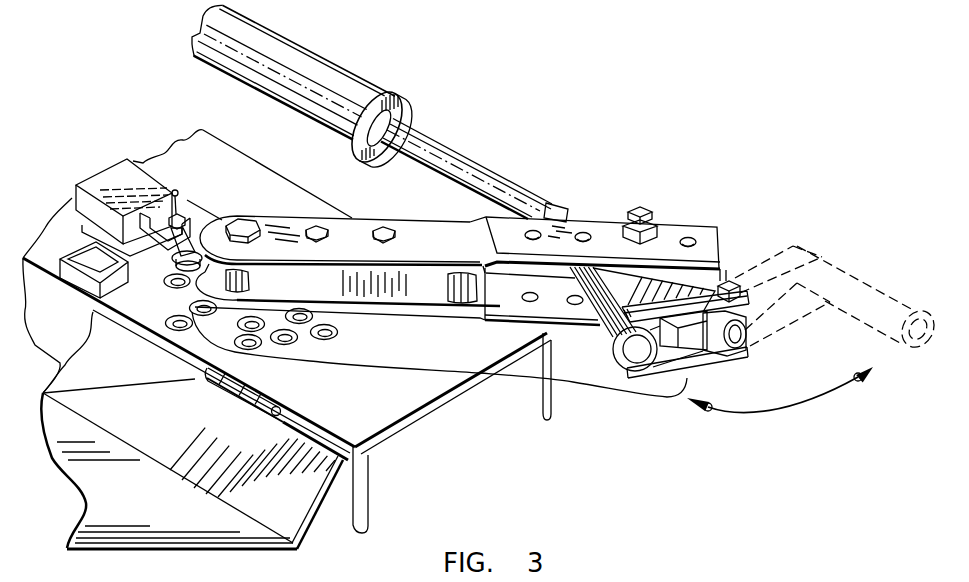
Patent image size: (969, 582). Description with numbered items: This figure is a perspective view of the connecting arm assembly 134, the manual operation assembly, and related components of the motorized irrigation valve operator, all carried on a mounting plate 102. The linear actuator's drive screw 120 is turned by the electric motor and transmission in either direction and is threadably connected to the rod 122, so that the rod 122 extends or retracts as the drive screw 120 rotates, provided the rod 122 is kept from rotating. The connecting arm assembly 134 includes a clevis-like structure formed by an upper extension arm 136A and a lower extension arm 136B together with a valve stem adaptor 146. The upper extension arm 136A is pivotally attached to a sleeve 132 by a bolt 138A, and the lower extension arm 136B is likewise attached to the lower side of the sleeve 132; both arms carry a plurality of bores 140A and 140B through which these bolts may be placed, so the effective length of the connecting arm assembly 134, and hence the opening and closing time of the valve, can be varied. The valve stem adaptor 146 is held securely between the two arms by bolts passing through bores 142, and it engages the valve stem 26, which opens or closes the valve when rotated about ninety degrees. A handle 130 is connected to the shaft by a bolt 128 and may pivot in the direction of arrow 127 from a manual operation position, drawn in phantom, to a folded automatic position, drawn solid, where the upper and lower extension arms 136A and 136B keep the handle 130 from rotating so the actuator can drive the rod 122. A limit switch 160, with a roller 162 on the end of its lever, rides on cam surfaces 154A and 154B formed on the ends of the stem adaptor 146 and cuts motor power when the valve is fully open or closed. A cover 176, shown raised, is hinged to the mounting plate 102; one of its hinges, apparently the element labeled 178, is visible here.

The valve stem 26 is at (244, 220).
The mounting plate 102 is at (372, 393).
The drive screw 120 is at (300, 60).
The rod 122 is at (467, 170).
The arrow 127 is at (780, 413).
The bolt 128 is at (742, 266).
The handle 130 is at (700, 366).
The sleeve 132 is at (728, 280).
The connecting arm assembly 134 is at (485, 387).
The upper extension arm 136A is at (457, 249).
The lower extension arm 136B is at (522, 305).
The bolt 138A is at (642, 207).
The bores 140A is at (583, 232).
The bores 140B is at (573, 305).
The bores 142 is at (385, 226).
The valve stem adaptor 146 is at (307, 291).
The cam surface 154A is at (233, 292).
The cam surface 154B is at (452, 305).
The limit switch 160 is at (103, 157).
The roller 162 is at (172, 274).
The cover 176 is at (150, 508).
The hinge pin 178 is at (282, 411).